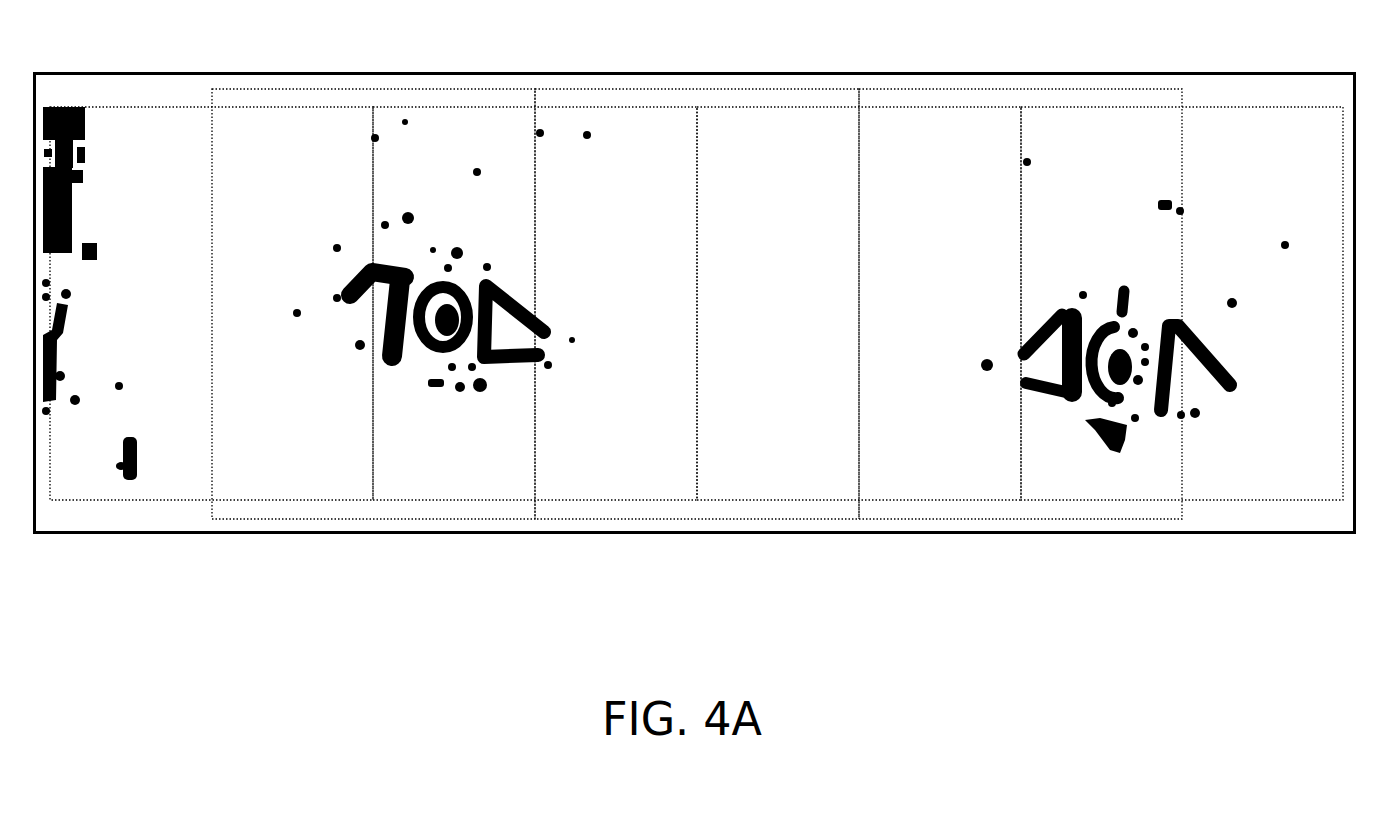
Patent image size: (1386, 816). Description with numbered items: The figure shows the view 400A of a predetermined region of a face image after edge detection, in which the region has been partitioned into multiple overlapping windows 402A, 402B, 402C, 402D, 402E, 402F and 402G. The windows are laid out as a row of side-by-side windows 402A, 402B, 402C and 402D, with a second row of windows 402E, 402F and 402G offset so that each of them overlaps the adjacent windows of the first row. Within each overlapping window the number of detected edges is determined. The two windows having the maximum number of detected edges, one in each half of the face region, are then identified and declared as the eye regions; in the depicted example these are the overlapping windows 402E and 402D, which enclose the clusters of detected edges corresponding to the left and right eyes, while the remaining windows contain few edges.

The image frame with detection regions 400A is at (790, 636).
The overlapping window 402A is at (278, 500).
The overlapping window 402B is at (500, 500).
The overlapping window 402C is at (848, 500).
The overlapping window 402D is at (1099, 500).
The overlapping window 402E is at (388, 88).
The overlapping window 402F is at (637, 88).
The overlapping window 402G is at (957, 88).